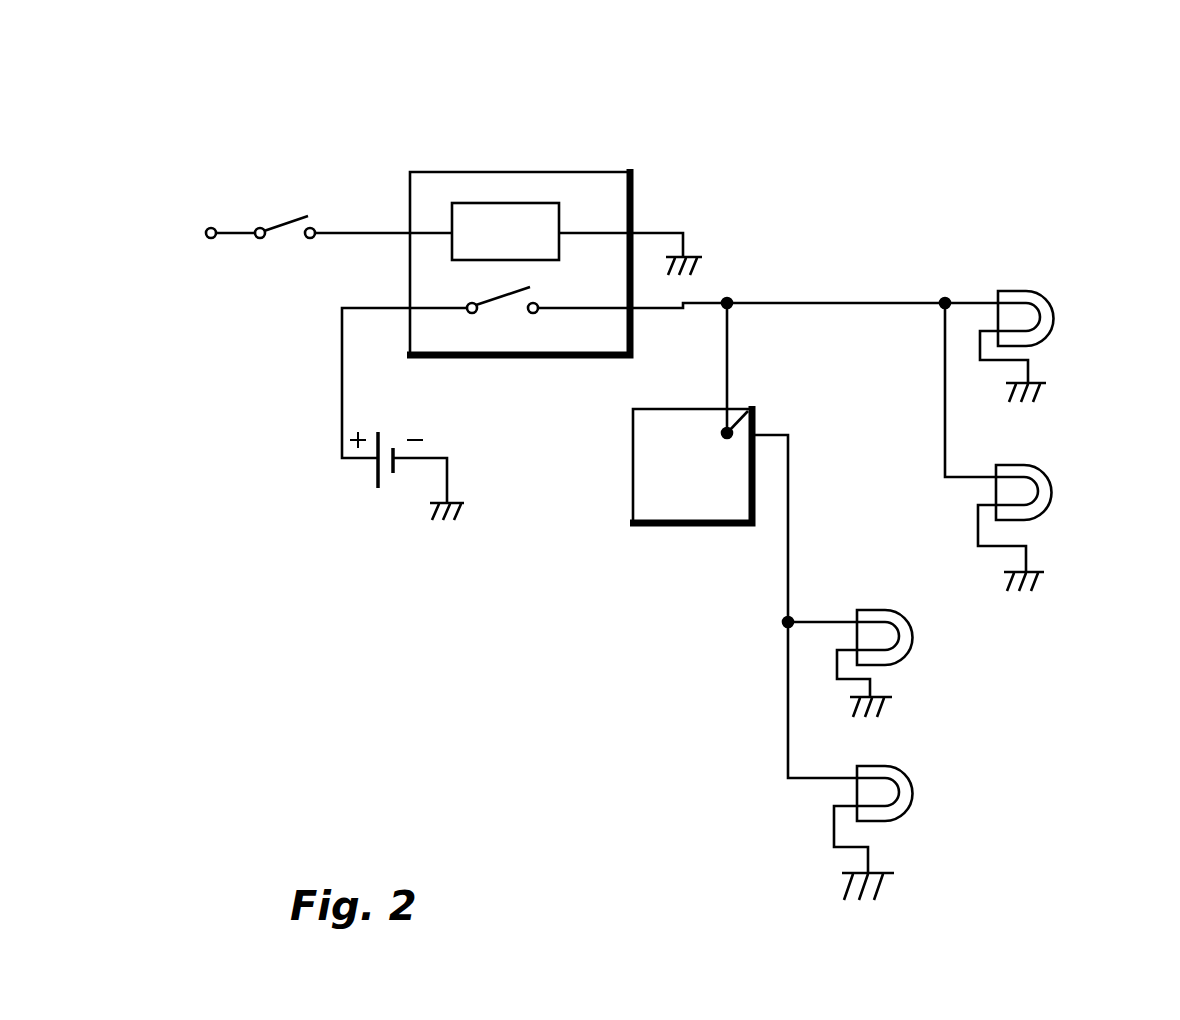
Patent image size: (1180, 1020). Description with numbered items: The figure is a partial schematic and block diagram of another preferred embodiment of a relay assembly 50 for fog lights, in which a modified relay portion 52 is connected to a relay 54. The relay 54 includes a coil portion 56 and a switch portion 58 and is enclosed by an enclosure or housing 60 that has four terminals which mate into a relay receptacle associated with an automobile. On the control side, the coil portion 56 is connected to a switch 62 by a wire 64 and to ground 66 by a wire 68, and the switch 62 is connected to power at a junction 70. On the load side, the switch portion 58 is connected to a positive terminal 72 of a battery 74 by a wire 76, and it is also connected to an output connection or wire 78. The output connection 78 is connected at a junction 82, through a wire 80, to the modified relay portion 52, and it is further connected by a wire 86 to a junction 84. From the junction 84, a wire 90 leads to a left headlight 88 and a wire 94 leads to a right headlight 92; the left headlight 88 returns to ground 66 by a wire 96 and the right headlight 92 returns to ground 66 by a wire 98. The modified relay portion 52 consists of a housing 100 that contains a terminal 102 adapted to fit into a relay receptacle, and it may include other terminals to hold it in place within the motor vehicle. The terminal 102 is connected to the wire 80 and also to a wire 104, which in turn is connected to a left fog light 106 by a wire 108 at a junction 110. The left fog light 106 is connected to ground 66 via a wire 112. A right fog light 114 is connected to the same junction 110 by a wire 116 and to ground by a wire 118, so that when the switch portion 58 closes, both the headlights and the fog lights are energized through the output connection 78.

The relay assembly 50 is at (563, 470).
The modified relay portion 52 is at (708, 493).
The relay 54 is at (494, 219).
The coil portion 56 is at (495, 203).
The switch portion 58 is at (505, 314).
The housing 60 is at (424, 172).
The switch 62 is at (277, 207).
The wire 64 is at (357, 233).
The ground 66 is at (692, 242).
The wire 68 is at (663, 232).
The junction 70 is at (207, 229).
The positive terminal 72 is at (376, 478).
The battery 74 is at (394, 494).
The wire 76 is at (342, 370).
The output connection 78 is at (667, 310).
The wire 80 is at (728, 352).
The junction 82 is at (729, 302).
The junction 84 is at (947, 303).
The wire 86 is at (876, 303).
The left headlight 88 is at (1046, 322).
The wire 90 is at (987, 297).
The right headlight 92 is at (1055, 513).
The wire 94 is at (945, 397).
The wire 96 is at (990, 362).
The wire 98 is at (988, 548).
The housing 100 is at (633, 443).
The terminal 102 is at (748, 410).
The wire 104 is at (790, 482).
The left fog light 106 is at (930, 603).
The wire 108 is at (820, 620).
The junction 110 is at (785, 624).
The wire 112 is at (873, 690).
The right fog light 114 is at (953, 807).
The wire 116 is at (788, 724).
The wire 118 is at (873, 857).